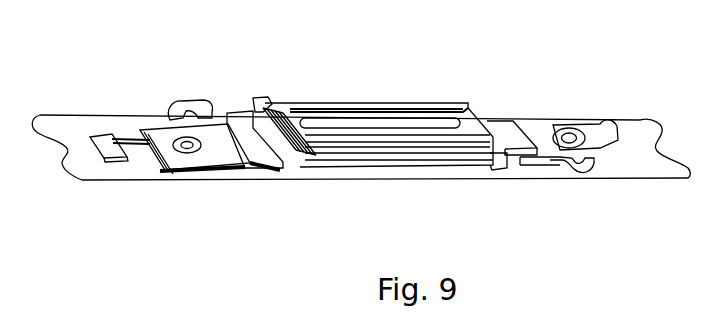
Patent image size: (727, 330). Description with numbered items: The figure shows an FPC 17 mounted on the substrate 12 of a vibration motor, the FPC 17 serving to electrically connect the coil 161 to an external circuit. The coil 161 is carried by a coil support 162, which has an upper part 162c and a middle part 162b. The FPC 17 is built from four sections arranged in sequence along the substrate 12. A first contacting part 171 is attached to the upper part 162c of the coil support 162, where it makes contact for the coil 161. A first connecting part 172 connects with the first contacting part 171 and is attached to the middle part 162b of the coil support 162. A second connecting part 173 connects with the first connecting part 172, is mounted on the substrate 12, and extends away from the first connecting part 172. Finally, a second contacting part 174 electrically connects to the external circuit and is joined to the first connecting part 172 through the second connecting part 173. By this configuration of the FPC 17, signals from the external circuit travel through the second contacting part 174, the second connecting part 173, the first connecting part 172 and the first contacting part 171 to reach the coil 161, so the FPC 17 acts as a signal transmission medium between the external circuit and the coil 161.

The substrate 12 is at (638, 138).
The FPC 17 is at (336, 227).
The first contacting part 171 is at (315, 140).
The first connecting part 172 is at (285, 168).
The second connecting part 173 is at (200, 174).
The second contacting part 174 is at (117, 158).
The coil 161 is at (473, 105).
The coil support 162 is at (374, 98).
The middle part 162b is at (500, 172).
The upper part 162c is at (268, 100).